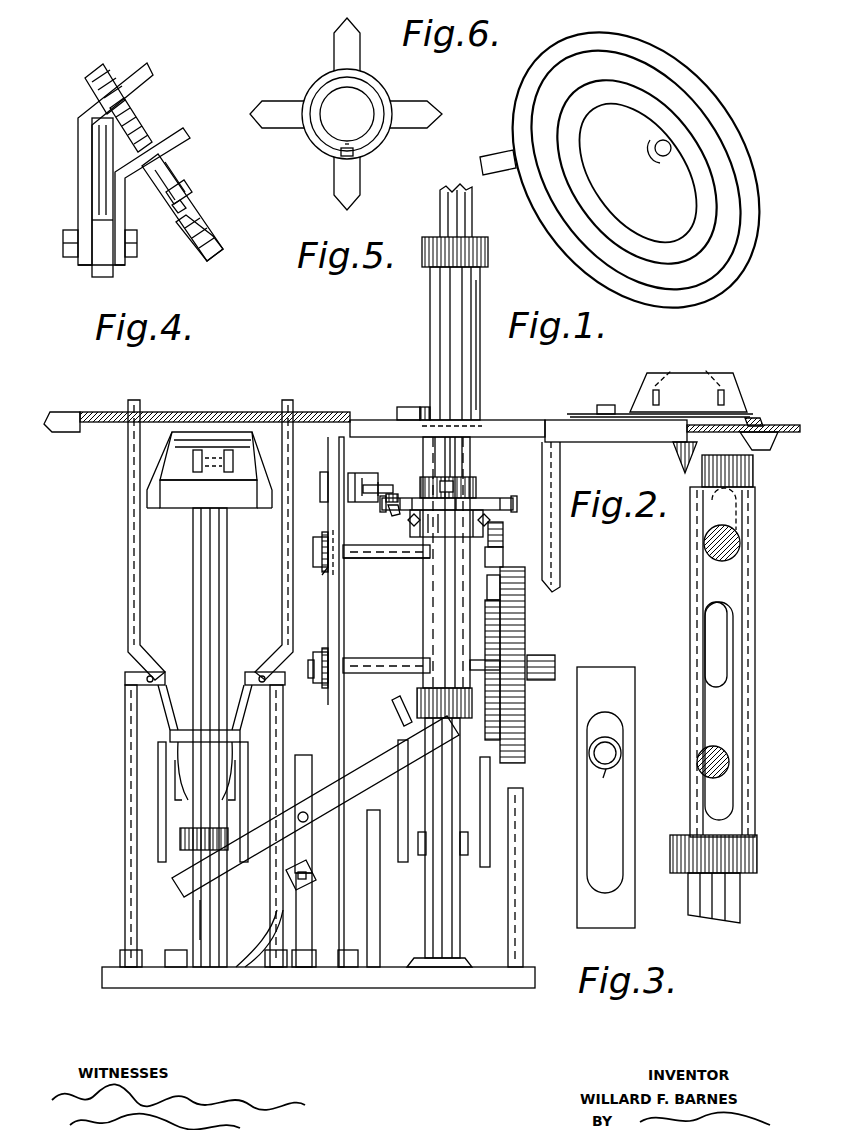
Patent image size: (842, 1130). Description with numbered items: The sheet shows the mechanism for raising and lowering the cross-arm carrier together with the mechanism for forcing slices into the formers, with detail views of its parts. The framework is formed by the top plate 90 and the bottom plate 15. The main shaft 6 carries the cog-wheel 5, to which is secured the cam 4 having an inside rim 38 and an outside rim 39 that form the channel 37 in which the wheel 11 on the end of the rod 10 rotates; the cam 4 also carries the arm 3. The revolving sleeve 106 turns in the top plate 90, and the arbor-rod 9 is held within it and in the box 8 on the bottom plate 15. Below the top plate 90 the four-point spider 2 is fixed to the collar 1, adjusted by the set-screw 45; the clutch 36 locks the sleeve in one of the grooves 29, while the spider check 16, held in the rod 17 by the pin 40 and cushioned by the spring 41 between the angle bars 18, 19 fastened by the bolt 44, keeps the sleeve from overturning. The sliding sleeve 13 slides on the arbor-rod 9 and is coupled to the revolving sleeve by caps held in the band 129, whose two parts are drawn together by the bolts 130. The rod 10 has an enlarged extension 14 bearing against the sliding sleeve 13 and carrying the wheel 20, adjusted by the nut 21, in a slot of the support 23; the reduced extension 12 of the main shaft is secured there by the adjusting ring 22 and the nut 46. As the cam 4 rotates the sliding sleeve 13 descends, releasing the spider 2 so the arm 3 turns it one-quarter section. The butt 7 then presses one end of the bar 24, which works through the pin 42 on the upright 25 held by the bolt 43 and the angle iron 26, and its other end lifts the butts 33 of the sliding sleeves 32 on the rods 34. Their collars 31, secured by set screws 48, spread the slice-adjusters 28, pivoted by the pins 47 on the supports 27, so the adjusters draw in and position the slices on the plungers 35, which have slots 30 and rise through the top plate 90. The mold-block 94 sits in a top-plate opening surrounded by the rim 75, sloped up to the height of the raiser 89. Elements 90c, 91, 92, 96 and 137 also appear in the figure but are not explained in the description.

In FIG. 5, the collar 1 is at (374, 95).
In FIG. 2, the collar 1 is at (478, 487).
In FIG. 5, the four-point spider 2 is at (360, 172).
In FIG. 2, the four-point spider 2 is at (517, 505).
In FIG. 1, the arm 3 is at (497, 152).
In FIG. 2, the arm 3 is at (504, 534).
In FIG. 1, the cam 4 is at (638, 173).
In FIG. 2, the cam 4 is at (504, 556).
In FIG. 2, the cog-wheel 5 is at (527, 626).
In FIG. 2, the main shaft 6 is at (555, 668).
In FIG. 2, the butt 7 is at (416, 692).
In FIG. 3, the butt 7 is at (757, 858).
In FIG. 2, the box 8 is at (470, 962).
In FIG. 6, the arbor-rod 9 is at (471, 213).
In FIG. 2, the arbor-rod 9 is at (468, 868).
In FIG. 3, the arbor-rod 9 is at (748, 903).
In FIG. 2, the rod 10 is at (486, 588).
In FIG. 2, the wheel 11 is at (484, 620).
In FIG. 2, the reduced extension 12 is at (380, 662).
In FIG. 3, the reduced extension 12 is at (713, 762).
In FIG. 2, the sliding sleeve 13 is at (422, 606).
In FIG. 3, the sliding sleeve 13 is at (690, 598).
In FIG. 2, the enlarged extension 14 is at (396, 558).
In FIG. 3, the enlarged extension 14 is at (722, 524).
In FIG. 2, the bottom plate 15 is at (318, 990).
In FIG. 2, the spider check 16 is at (396, 494).
In FIG. 4, the spider check 16 is at (212, 228).
In FIG. 2, the rod 17 is at (380, 484).
In FIG. 4, the rod 17 is at (170, 168).
In FIG. 2, the angle bar 18 is at (356, 472).
In FIG. 4, the angle bar 18 is at (126, 204).
In FIG. 2, the angle bar 19 is at (326, 465).
In FIG. 4, the angle bar 19 is at (77, 198).
In FIG. 2, the wheel 20 is at (315, 580).
In FIG. 3, the wheel 20 is at (602, 782).
In FIG. 2, the nut 21 is at (314, 542).
In FIG. 3, the nut 21 is at (605, 753).
In FIG. 2, the adjusting ring 22 is at (320, 650).
In FIG. 2, the support 23 is at (344, 716).
In FIG. 3, the support 23 is at (635, 706).
In FIG. 4, the support 23 is at (90, 272).
In FIG. 2, the bar 24 is at (360, 800).
In FIG. 2, the upright 25 is at (305, 752).
In FIG. 2, the angle iron 26 is at (262, 912).
In FIG. 2, the support 27 is at (124, 772).
In FIG. 2, the slice-adjuster 28 is at (140, 582).
In FIG. 6, the groove 29 is at (455, 325).
In FIG. 2, the groove 29 is at (440, 452).
In FIG. 2, the slot 30 is at (228, 472).
In FIG. 2, the collar 31 is at (186, 728).
In FIG. 2, the sliding sleeve 32 is at (192, 617).
In FIG. 2, the butt 33 is at (185, 853).
In FIG. 2, the rod 34 is at (195, 918).
In FIG. 2, the plunger 35 is at (187, 508).
In FIG. 2, the clutch 36 is at (408, 406).
In FIG. 1, the channel 37 is at (636, 169).
In FIG. 1, the inside rim 38 is at (636, 172).
In FIG. 1, the outside rim 39 is at (635, 177).
In FIG. 2, the pin 40 is at (388, 510).
In FIG. 4, the pin 40 is at (190, 190).
In FIG. 4, the cushion spring 41 is at (150, 128).
In FIG. 2, the pin 42 is at (310, 819).
In FIG. 2, the bolt 43 is at (318, 880).
In FIG. 2, the bolt 44 is at (320, 492).
In FIG. 4, the bolt 44 is at (137, 250).
In FIG. 5, the set-screw 45 is at (322, 162).
In FIG. 2, the set-screw 45 is at (476, 462).
In FIG. 2, the nut 46 is at (308, 667).
In FIG. 2, the pin 47 is at (158, 664).
In FIG. 2, the set screw 48 is at (234, 712).
In FIG. 2, the rim 75 is at (606, 404).
In FIG. 2, the raiser 89 is at (580, 412).
In FIG. 2, the top plate 90 is at (104, 408).
In FIG. 2, the hanger plate 90c is at (560, 570).
In FIG. 2, the slide bar 91 is at (740, 424).
In FIG. 2, the wedge 92 is at (668, 455).
In FIG. 2, the mold-block 94 is at (688, 392).
In FIG. 2, the hook 96 is at (772, 445).
In FIG. 6, the revolving sleeve 106 is at (486, 392).
In FIG. 2, the band 129 is at (386, 570).
In FIG. 2, the bolt 130 is at (408, 524).
In FIG. 2, the slots 137 is at (687, 369).